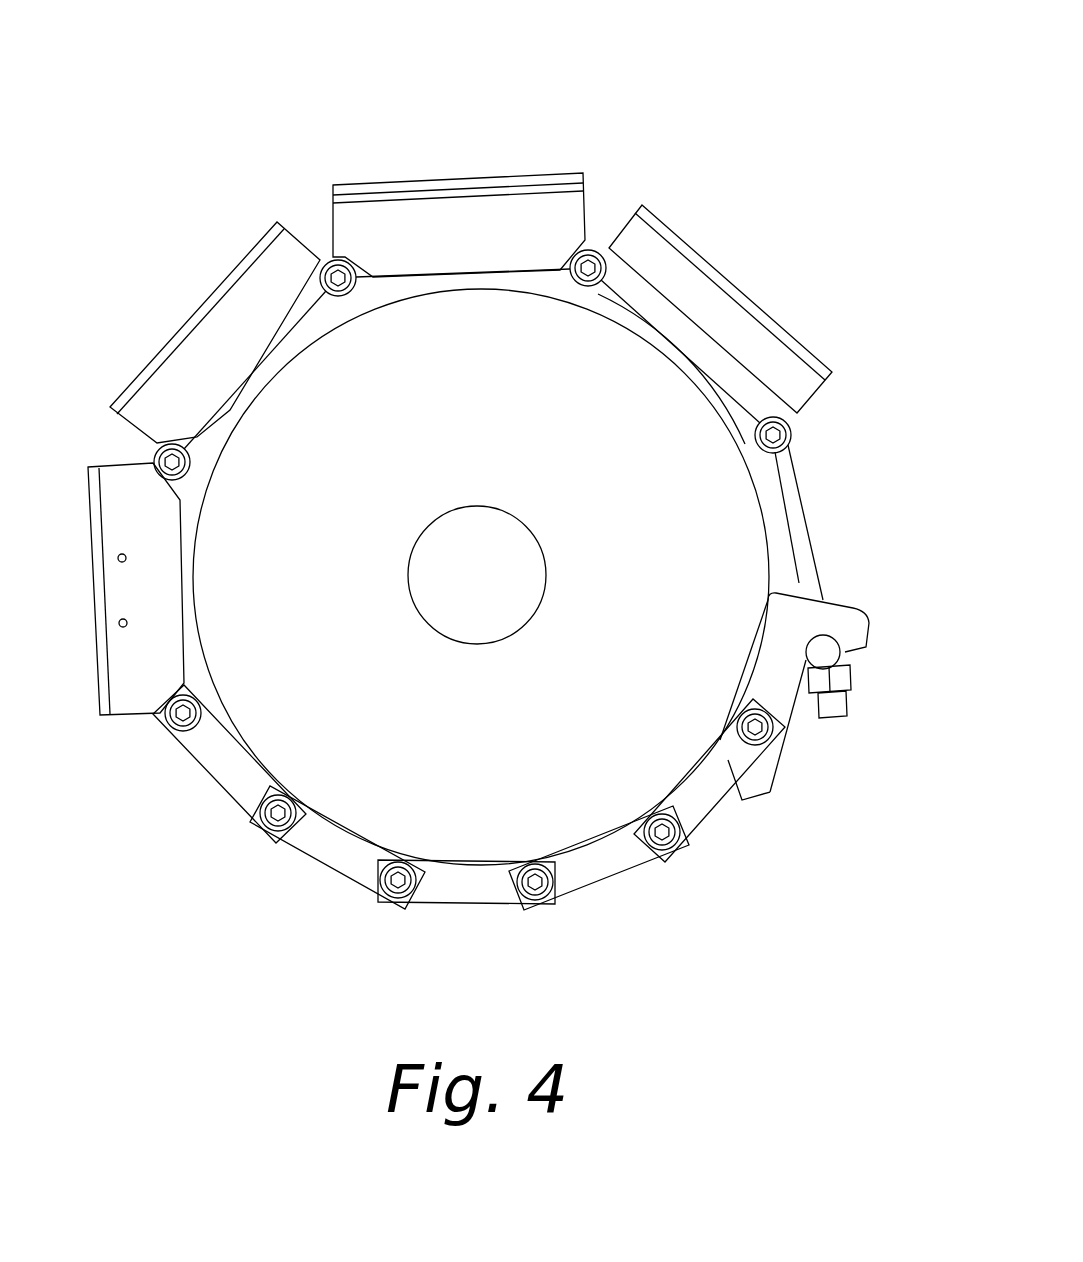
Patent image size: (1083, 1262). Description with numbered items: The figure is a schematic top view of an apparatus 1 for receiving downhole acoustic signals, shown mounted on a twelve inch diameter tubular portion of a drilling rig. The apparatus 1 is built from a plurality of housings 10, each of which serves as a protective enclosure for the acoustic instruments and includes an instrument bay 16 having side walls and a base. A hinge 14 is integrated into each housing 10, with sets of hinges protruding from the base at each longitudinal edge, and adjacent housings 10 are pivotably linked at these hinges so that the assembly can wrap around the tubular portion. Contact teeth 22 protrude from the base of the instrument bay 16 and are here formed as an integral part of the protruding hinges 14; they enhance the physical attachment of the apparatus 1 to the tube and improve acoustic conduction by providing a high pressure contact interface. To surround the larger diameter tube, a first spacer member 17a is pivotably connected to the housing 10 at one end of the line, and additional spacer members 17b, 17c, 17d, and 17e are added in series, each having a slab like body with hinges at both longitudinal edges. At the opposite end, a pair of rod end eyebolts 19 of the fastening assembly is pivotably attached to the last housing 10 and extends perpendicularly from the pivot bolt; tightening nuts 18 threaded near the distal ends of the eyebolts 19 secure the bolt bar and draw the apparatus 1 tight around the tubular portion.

The apparatus 1 is at (517, 436).
The housing 10 is at (478, 179).
The hinge 14 is at (611, 351).
The instrument bay 16 is at (729, 309).
The first spacer member 17a is at (214, 773).
The spacer member 17b is at (334, 881).
The spacer member 17c is at (466, 937).
The spacer member 17d is at (627, 896).
The spacer member 17e is at (751, 804).
The tightening nut 18 is at (816, 734).
The rod end eyebolt 19 is at (805, 622).
The contact teeth 22 is at (609, 374).